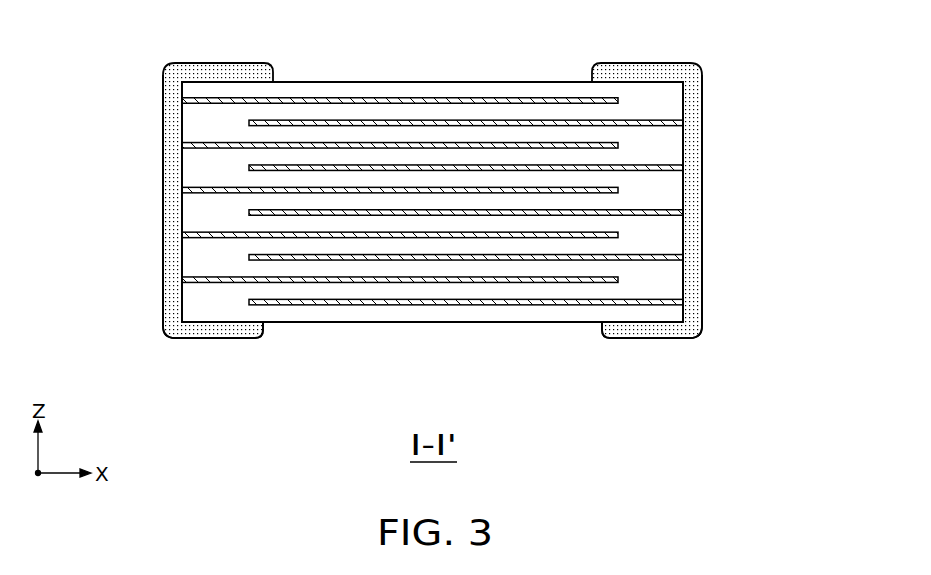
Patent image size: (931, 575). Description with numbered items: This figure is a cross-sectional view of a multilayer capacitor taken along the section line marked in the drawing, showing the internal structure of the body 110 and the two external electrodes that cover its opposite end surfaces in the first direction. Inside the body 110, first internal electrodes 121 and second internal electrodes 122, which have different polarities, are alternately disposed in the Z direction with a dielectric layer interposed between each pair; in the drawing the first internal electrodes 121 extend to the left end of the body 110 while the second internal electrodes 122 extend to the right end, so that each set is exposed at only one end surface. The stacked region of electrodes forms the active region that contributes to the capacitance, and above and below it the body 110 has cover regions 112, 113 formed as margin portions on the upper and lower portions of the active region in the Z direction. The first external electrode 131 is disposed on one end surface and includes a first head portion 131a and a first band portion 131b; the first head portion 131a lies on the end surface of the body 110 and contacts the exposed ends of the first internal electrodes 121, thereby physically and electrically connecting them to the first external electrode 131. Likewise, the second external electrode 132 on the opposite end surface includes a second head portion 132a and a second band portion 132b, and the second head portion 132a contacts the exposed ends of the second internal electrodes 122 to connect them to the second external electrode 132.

The body 110 is at (470, 82).
The cover region 112 is at (397, 93).
The cover region 113 is at (462, 310).
The first internal electrode 121 is at (329, 100).
The second internal electrode 122 is at (543, 122).
The first external electrode 131 is at (78, 218).
The first head portion 131a is at (172, 222).
The first band portion 131b is at (215, 333).
The second external electrode 132 is at (789, 218).
The second head portion 132a is at (697, 222).
The second band portion 132b is at (650, 333).